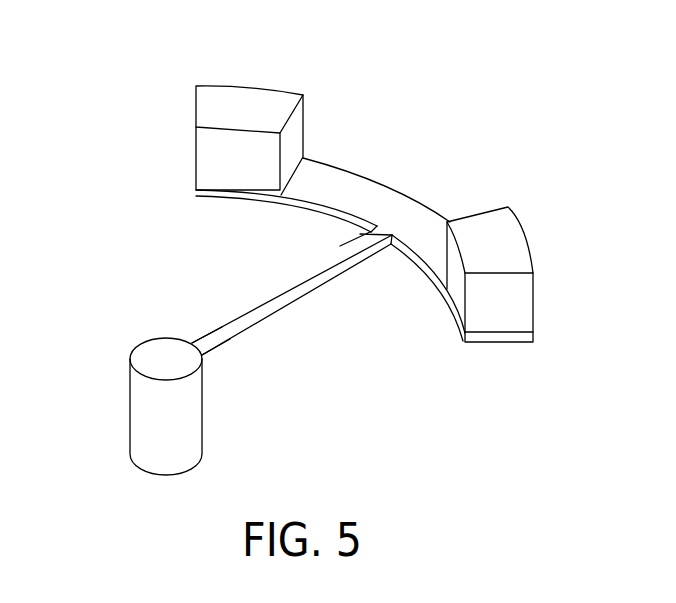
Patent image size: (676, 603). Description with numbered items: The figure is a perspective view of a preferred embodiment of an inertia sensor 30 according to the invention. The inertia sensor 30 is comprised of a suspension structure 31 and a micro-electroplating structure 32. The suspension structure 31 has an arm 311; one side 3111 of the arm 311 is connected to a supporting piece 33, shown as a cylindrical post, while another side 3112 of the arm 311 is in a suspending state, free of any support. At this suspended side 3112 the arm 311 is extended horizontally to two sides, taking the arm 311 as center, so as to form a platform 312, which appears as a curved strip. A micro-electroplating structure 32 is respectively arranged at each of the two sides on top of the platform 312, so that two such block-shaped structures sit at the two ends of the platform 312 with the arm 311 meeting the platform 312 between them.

The inertia sensor 30 is at (134, 208).
The suspension structure 31 is at (425, 387).
The arm 311 is at (295, 288).
The platform 312 is at (417, 257).
The side of the arm 3111 is at (200, 337).
The side of the arm 3112 is at (372, 229).
The micro-electroplating structure 32 is at (245, 97).
The supporting piece 33 is at (132, 404).